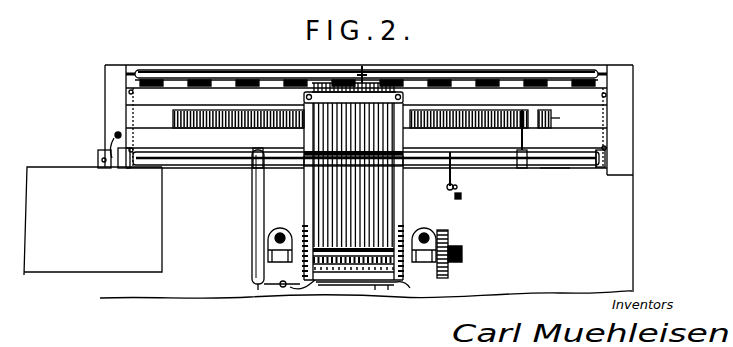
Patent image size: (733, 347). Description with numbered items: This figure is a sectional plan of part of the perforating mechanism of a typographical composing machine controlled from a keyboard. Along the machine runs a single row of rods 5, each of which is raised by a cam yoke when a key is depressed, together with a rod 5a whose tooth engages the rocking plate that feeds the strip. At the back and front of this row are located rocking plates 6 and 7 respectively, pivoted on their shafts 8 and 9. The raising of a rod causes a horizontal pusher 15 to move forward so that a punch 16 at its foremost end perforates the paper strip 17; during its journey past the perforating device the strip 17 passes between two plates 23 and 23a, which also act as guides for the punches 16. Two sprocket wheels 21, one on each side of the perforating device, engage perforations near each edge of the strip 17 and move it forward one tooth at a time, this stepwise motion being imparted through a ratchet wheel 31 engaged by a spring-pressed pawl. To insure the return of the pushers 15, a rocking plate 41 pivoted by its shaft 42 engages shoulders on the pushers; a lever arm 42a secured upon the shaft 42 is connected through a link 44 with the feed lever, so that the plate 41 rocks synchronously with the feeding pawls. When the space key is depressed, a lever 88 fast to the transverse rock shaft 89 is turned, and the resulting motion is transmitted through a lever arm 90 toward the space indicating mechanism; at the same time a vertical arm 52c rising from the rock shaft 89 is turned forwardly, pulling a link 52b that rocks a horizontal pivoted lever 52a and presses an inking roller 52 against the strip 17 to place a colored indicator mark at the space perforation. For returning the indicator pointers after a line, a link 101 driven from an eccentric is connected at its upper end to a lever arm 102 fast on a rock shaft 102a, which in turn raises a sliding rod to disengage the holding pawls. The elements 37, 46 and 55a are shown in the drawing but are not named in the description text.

The rod 5 is at (232, 106).
The rod 5a is at (552, 122).
The rocking plate 6 is at (245, 80).
The rocking plate 7 is at (583, 165).
The shaft 8 is at (229, 70).
The shaft 9 is at (560, 168).
The pusher 15 is at (322, 184).
The punch 16 is at (343, 286).
The strip 17 is at (380, 290).
The sprocket wheel 21 is at (285, 287).
The plate 23 is at (406, 287).
The plate 23a is at (390, 290).
The ratchet wheel 31 is at (447, 238).
The stop 37 is at (462, 197).
The rocking plate 41 is at (375, 164).
The shaft 42 is at (380, 156).
The lever arm 42a is at (454, 178).
The link 44 is at (458, 188).
The bearing 46 is at (282, 230).
The inking roller 52 is at (312, 288).
The pivoted lever 52a is at (268, 290).
The link 52b is at (252, 253).
The vertical arm 52c is at (258, 148).
The rack segment 55a is at (545, 110).
The lever 88 is at (524, 140).
The rock shaft 89 is at (203, 147).
The lever arm 90 is at (122, 168).
The link 101 is at (114, 134).
The lever arm 102 is at (110, 146).
The rock shaft 102a is at (98, 153).